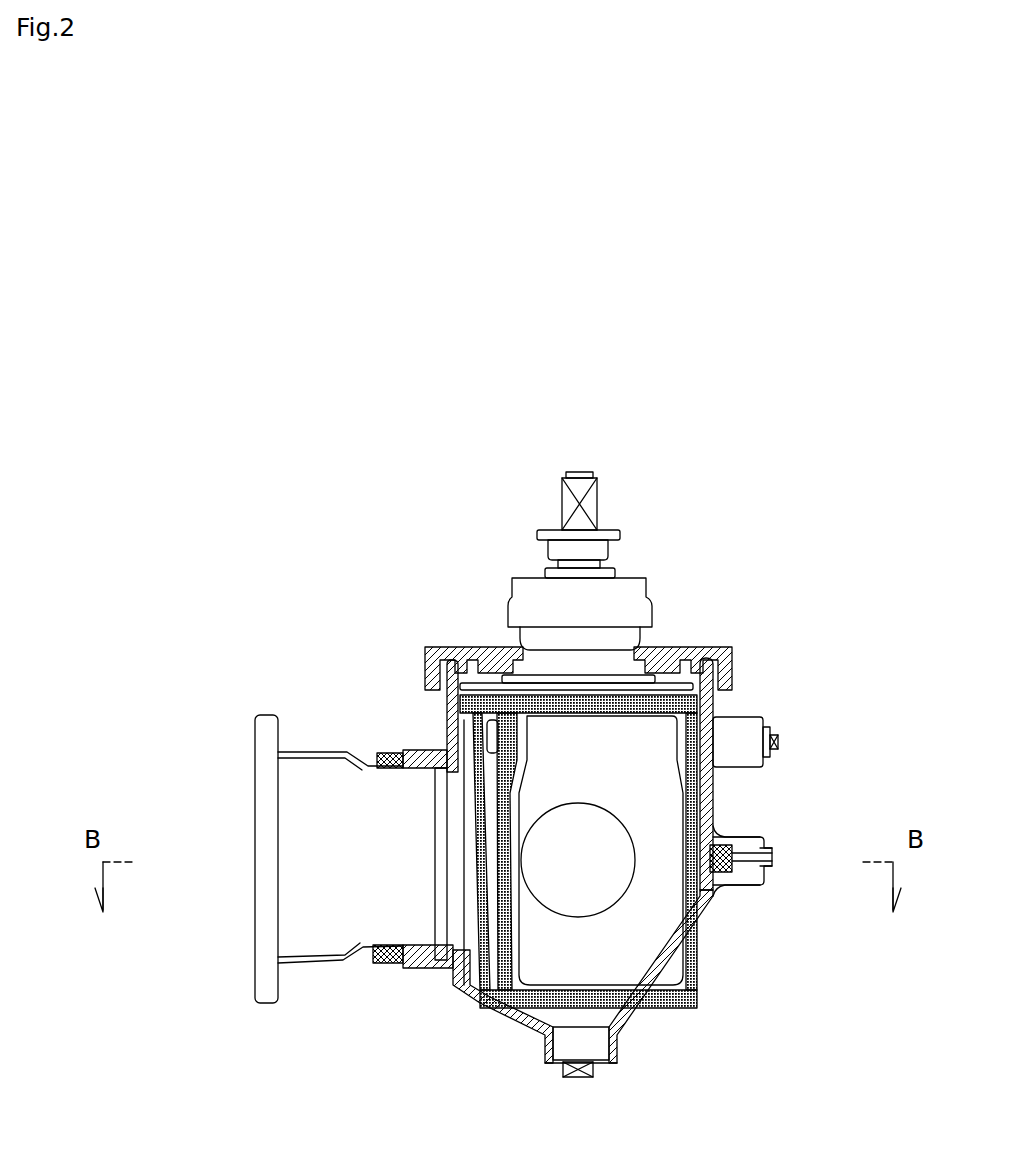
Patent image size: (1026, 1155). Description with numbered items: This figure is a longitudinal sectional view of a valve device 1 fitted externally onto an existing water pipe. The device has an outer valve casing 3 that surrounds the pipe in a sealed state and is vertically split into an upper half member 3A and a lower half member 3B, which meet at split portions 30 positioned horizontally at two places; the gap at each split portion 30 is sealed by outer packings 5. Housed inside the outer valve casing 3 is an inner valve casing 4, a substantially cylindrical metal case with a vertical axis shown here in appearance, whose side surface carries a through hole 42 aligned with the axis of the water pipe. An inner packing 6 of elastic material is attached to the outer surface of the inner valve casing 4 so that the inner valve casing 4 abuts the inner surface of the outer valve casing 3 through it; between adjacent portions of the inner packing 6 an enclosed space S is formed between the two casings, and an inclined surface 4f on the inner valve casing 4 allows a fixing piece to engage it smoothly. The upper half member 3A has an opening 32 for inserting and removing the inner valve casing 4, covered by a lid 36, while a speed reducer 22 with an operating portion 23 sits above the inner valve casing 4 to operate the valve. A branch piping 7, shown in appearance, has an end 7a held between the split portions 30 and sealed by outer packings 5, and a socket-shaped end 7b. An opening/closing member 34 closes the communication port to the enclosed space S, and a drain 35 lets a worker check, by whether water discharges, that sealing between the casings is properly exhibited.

The valve device 1 is at (355, 566).
The outer valve casing 3 is at (480, 1010).
The upper half member 3A is at (716, 800).
The lower half member 3B is at (707, 940).
The inner valve casing 4 is at (620, 978).
The inclined surface 4f is at (487, 760).
The outer packing 5 is at (400, 752).
The inner packing 6 is at (487, 686).
The branch piping 7 is at (302, 966).
The end 7a is at (446, 970).
The end 7b is at (255, 800).
The speed reducer 22 is at (512, 587).
The operating portion 23 is at (565, 504).
The split portion 30 is at (778, 870).
The opening 32 is at (447, 702).
The opening/closing member 34 is at (786, 726).
The drain 35 is at (546, 1050).
The lid 36 is at (678, 648).
The through hole 42 is at (605, 905).
The enclosed space S is at (480, 875).